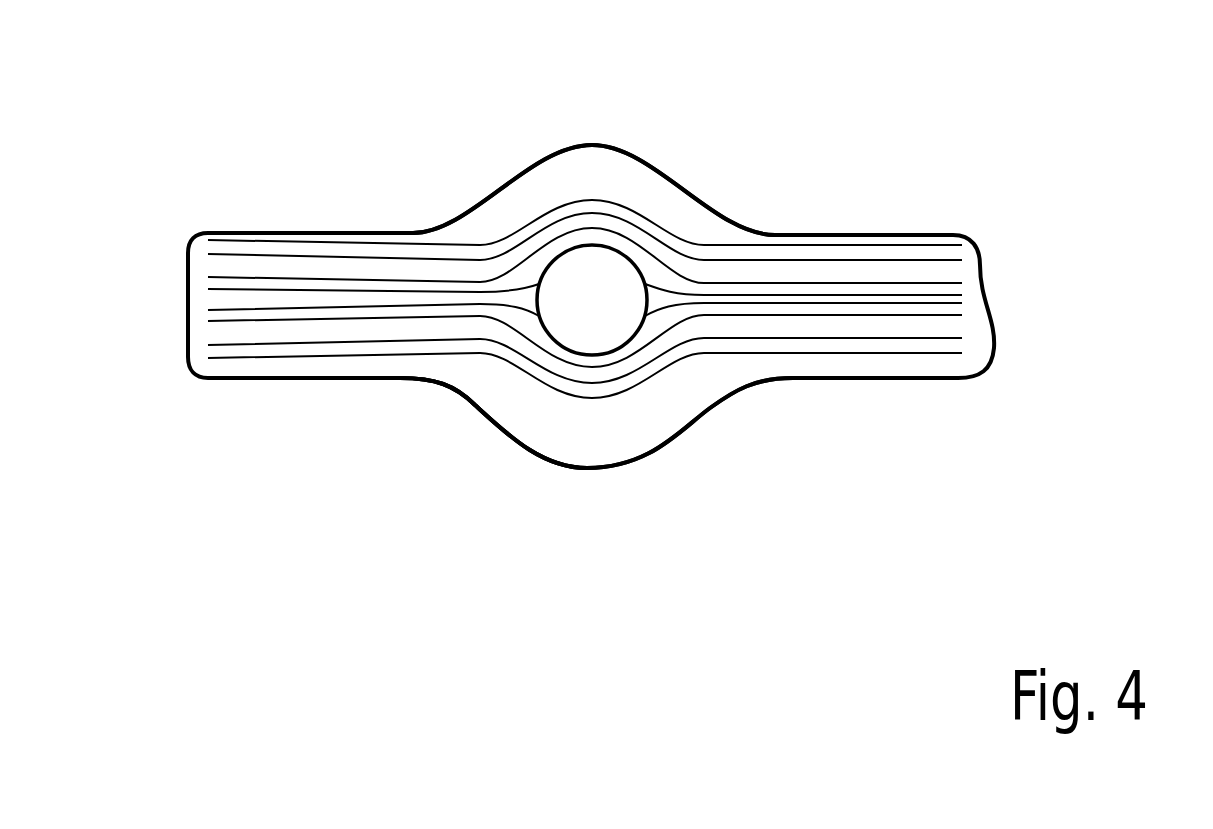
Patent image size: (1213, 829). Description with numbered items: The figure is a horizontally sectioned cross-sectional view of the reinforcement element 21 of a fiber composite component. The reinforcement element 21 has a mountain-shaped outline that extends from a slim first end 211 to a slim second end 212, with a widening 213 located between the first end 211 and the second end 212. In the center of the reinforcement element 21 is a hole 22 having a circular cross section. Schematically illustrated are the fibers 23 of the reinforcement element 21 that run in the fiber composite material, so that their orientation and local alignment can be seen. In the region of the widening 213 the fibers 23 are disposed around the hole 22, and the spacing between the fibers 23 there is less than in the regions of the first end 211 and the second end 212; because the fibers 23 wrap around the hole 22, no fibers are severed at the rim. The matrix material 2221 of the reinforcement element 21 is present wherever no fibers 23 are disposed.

The reinforcement element 21 is at (793, 128).
The hole 22 is at (600, 282).
The fibers 23 is at (507, 237).
The first end 211 is at (245, 300).
The second end 212 is at (940, 300).
The widening 213 is at (597, 447).
The matrix material 2221 is at (528, 405).